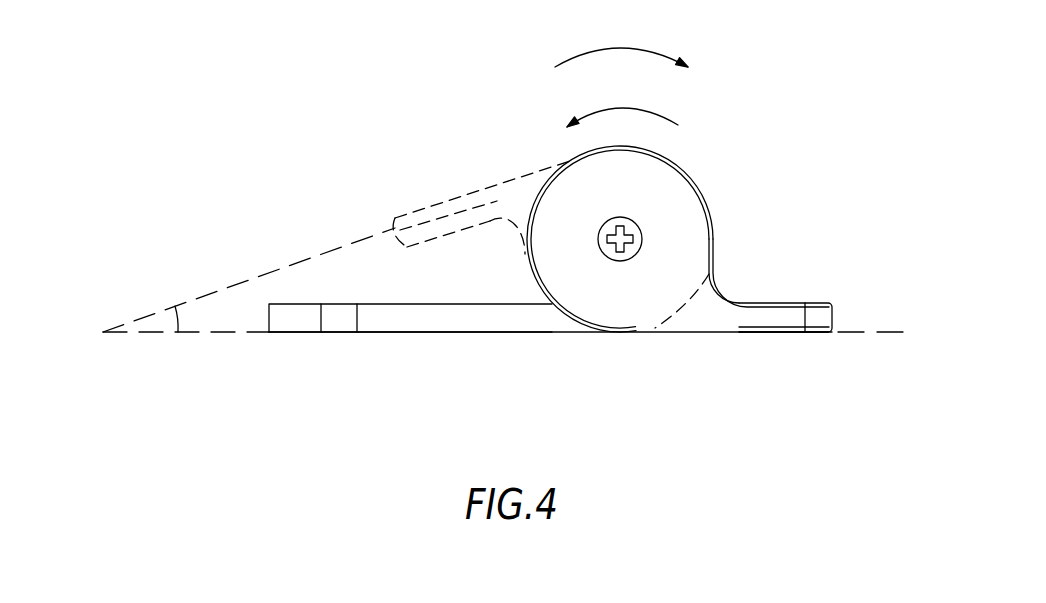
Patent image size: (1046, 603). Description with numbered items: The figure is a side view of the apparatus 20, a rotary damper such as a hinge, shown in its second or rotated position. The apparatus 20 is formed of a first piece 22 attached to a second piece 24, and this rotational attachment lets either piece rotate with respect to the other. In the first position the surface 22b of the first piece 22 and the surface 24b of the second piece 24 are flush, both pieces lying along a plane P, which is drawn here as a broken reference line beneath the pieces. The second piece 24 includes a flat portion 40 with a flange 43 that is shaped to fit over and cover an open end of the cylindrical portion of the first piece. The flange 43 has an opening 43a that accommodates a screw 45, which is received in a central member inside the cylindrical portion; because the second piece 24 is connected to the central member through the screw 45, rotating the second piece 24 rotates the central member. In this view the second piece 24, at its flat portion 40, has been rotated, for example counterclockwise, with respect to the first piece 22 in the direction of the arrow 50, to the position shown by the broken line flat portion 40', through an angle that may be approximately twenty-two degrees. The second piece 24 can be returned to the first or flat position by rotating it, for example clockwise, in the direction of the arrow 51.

The apparatus 20 is at (297, 204).
The first piece 22 is at (423, 298).
The surface of the first piece 22b is at (390, 332).
The second piece 24 is at (730, 287).
The surface of the second piece 24b is at (765, 333).
The flat portion 40 is at (681, 262).
The broken line flat portion 40' is at (338, 243).
The flange 43 is at (632, 303).
The opening 43a is at (643, 240).
The screw 45 is at (635, 231).
The arrow 50 is at (650, 110).
The arrow 51 is at (582, 55).
The plane P is at (195, 333).